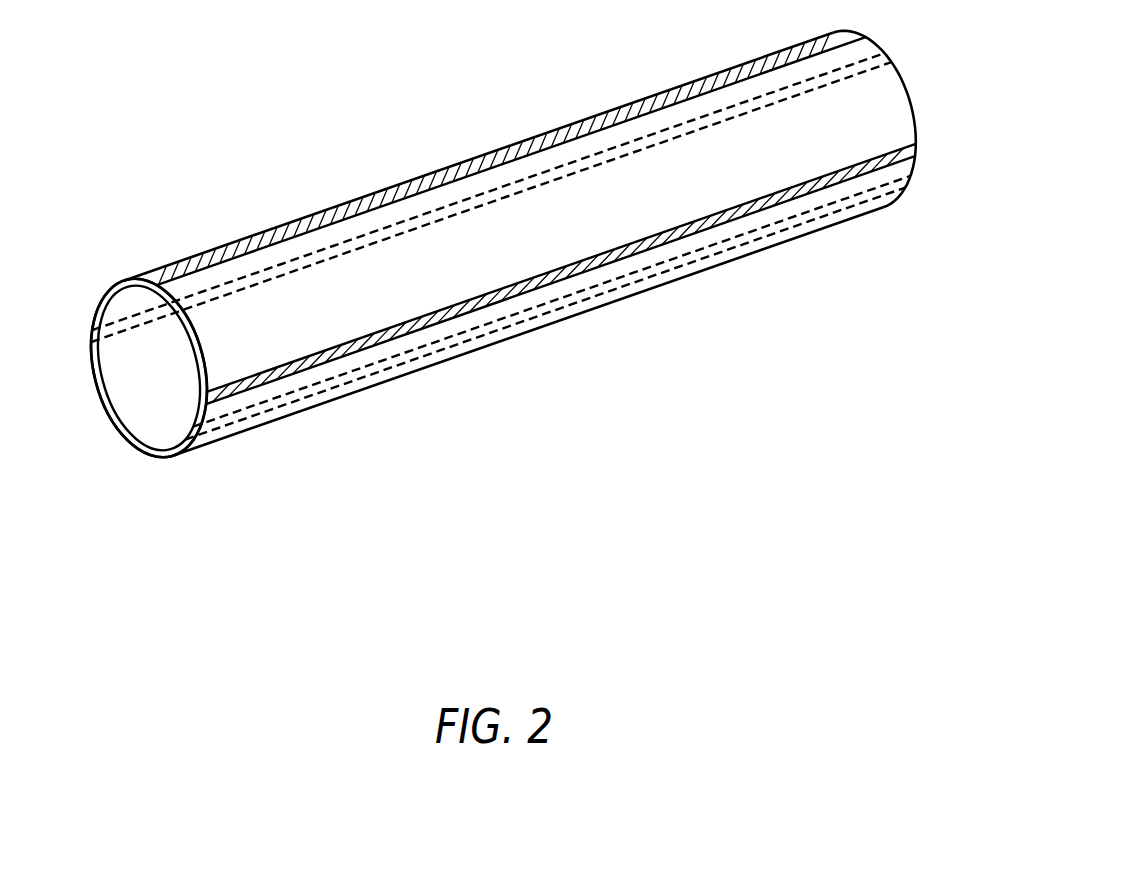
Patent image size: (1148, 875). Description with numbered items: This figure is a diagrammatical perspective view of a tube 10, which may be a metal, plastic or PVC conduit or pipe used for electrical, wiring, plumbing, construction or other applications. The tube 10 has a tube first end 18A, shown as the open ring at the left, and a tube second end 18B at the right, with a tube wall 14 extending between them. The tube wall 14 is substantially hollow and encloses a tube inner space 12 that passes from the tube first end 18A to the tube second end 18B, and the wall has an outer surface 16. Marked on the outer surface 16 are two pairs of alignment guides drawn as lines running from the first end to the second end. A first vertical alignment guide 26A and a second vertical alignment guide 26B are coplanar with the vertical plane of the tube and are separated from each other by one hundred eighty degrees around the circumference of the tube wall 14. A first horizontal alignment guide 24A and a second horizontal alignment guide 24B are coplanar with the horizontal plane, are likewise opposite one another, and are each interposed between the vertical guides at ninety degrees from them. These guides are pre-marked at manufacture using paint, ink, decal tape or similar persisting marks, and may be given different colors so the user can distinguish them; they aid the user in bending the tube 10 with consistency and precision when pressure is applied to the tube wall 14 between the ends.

The tube 10 is at (504, 277).
The tube inner space 12 is at (128, 384).
The tube wall 14 is at (158, 457).
The outer surface 16 is at (332, 313).
The tube first end 18A is at (118, 427).
The tube second end 18B is at (909, 118).
The first horizontal alignment guide 24A is at (115, 335).
The second horizontal alignment guide 24B is at (437, 320).
The first vertical alignment guide 26A is at (283, 232).
The second vertical alignment guide 26B is at (245, 425).